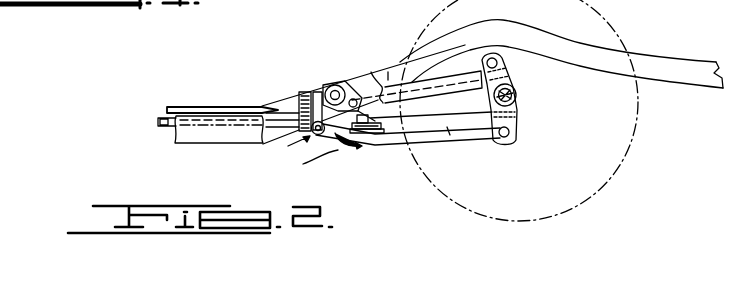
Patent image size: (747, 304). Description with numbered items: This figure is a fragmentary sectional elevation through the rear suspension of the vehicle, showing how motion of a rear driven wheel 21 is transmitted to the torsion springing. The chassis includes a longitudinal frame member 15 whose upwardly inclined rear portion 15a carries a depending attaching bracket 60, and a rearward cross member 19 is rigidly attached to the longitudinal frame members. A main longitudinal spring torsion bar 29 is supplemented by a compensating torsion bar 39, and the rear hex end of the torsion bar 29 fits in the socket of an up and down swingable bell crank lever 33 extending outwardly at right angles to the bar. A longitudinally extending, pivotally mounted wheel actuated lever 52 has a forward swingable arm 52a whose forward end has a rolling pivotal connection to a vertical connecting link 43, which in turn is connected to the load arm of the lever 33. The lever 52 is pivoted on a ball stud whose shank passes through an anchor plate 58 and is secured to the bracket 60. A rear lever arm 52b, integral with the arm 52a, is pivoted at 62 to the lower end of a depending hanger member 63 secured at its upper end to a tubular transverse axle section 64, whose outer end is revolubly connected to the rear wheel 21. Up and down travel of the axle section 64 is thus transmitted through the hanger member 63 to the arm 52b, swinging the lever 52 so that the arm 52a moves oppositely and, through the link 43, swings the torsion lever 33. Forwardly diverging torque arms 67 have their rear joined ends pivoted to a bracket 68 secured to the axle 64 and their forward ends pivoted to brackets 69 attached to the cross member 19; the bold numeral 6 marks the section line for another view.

The section indicator 6 is at (320, 157).
The longitudinal frame member 15 is at (201, 131).
The upwardly inclined rear portion 15a is at (404, 60).
The rearward cross member 19 is at (332, 85).
The rear driven wheel 21 is at (612, 16).
The longitudinal spring torsion bar 29 is at (162, 124).
The bell crank lever 33 is at (304, 94).
The compensating torsion bar 39 is at (169, 107).
The vertical connecting link 43 is at (320, 94).
The wheel actuated lever 52 is at (368, 144).
The forward swingable arm 52a is at (277, 151).
The rear lever arm 52b is at (447, 140).
The anchor plate 58 is at (378, 137).
The attaching bracket 60 is at (422, 96).
The pivot 62 is at (505, 143).
The hanger member 63 is at (518, 117).
The tubular transverse axle section 64 is at (517, 95).
The torque arm 67 is at (470, 50).
The bracket 68 is at (506, 62).
The bracket 69 is at (352, 99).